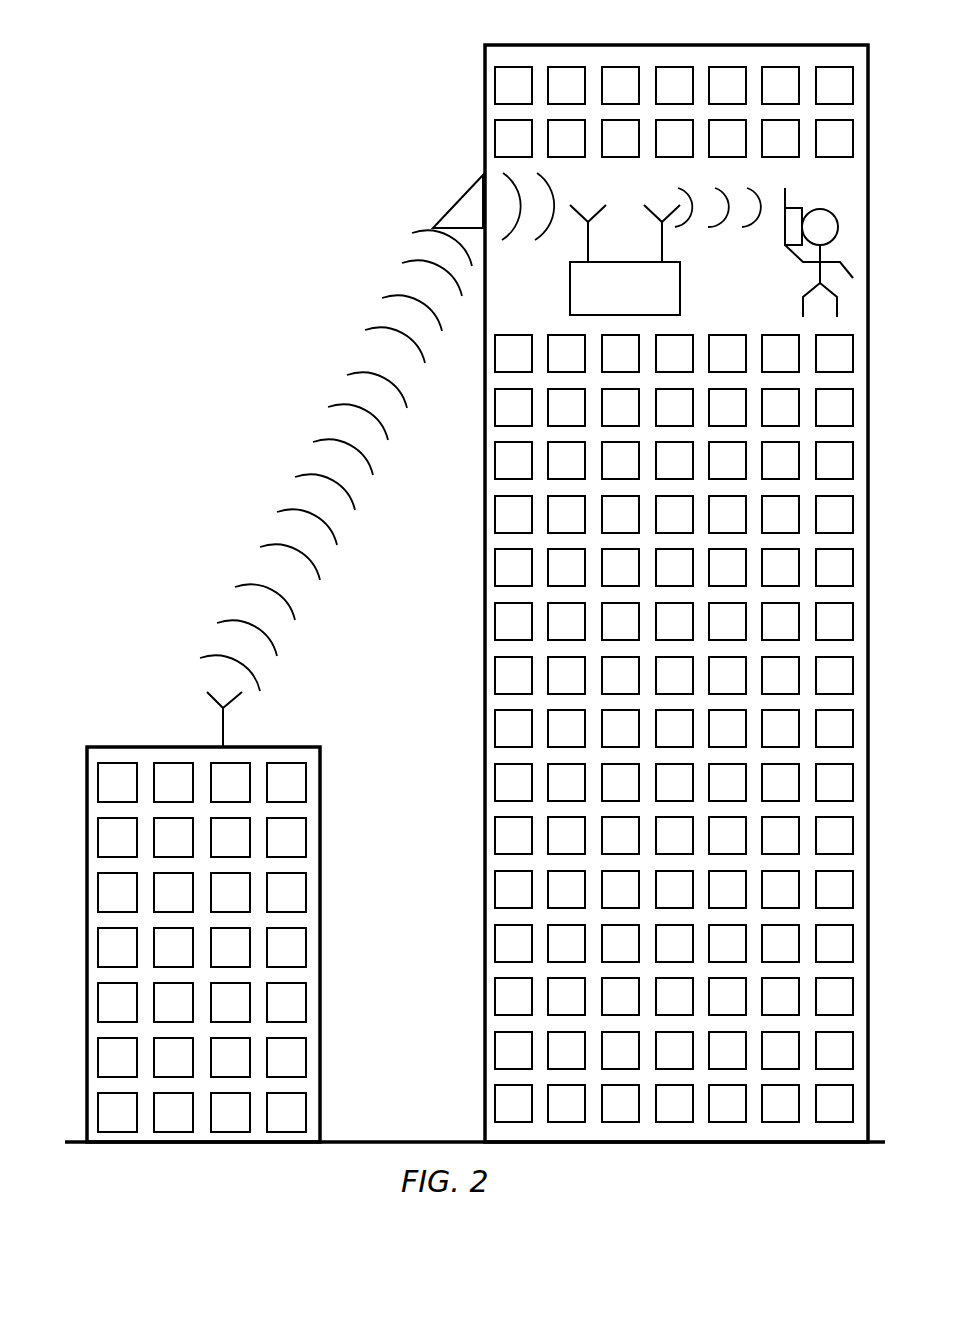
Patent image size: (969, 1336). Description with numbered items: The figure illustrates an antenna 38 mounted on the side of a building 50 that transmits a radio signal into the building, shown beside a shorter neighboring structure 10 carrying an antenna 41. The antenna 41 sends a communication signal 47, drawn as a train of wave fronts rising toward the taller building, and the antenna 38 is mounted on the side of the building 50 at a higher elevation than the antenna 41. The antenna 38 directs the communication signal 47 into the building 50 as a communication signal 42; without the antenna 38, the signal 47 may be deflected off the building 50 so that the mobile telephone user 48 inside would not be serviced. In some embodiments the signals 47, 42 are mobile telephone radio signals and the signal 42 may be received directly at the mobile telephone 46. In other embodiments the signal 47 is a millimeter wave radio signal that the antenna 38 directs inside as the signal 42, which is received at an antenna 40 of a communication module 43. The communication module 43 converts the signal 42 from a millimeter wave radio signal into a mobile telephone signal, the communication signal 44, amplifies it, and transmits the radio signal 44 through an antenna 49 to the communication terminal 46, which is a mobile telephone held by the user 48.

The first building 10 is at (320, 1050).
The building 50 is at (485, 107).
The antenna 41 is at (221, 728).
The communication signal 47 is at (375, 355).
The antenna 38 is at (468, 212).
The communication signal 42 is at (542, 182).
The communication module 43 is at (590, 300).
The antenna 40 is at (590, 245).
The antenna 49 is at (662, 245).
The communication signal 44 is at (730, 188).
The mobile telephone 46 is at (785, 225).
The mobile telephone user 48 is at (815, 263).